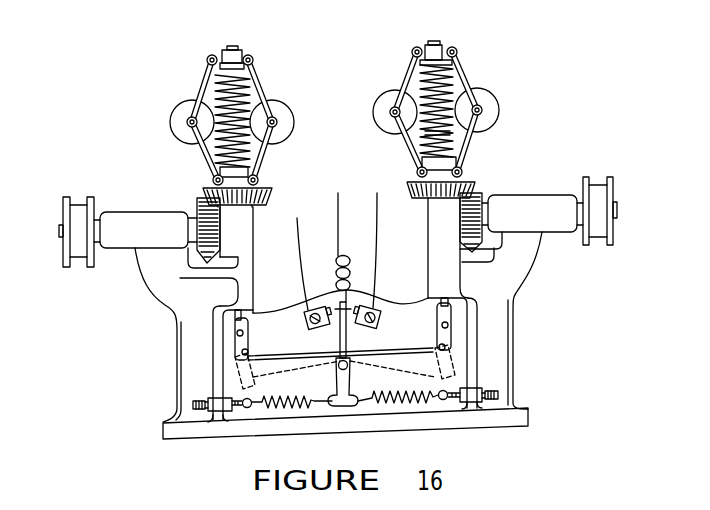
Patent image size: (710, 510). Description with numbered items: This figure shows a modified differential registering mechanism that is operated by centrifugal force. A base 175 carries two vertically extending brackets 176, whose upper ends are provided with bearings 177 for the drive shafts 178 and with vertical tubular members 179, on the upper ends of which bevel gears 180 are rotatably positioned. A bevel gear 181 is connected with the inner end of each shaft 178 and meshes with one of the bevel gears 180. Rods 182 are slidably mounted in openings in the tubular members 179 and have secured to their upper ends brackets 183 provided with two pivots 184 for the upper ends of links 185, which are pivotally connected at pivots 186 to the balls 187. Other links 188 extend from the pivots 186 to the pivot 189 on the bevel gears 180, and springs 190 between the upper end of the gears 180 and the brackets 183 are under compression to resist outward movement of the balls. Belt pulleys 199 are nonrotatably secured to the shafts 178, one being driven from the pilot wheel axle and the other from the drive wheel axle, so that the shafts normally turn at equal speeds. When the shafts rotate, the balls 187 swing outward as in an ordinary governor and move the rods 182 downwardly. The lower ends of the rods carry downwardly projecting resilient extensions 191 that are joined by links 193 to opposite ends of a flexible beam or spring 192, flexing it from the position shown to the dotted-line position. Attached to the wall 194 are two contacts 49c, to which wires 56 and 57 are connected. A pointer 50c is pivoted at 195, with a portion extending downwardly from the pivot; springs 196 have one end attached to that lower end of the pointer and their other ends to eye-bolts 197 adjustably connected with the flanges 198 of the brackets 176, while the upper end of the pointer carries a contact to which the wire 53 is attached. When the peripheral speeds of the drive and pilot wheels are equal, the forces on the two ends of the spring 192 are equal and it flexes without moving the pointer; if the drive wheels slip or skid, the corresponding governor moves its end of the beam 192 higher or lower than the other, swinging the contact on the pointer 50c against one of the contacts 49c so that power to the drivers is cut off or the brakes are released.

The base 175 is at (257, 433).
The brackets 176 is at (175, 353).
The bearings 177 is at (145, 208).
The drive shafts 178 is at (60, 237).
The vertical tubular members 179 is at (242, 233).
The bevel gears 180 is at (263, 190).
The bevel gear 181 is at (203, 200).
The rods 182 is at (247, 85).
The brackets 183 is at (243, 50).
The pivots 184 is at (457, 48).
The links 185 is at (407, 80).
The pivots 186 is at (392, 110).
The balls 187 is at (390, 120).
The links 188 is at (412, 145).
The pivot 189 is at (418, 172).
The springs 190 is at (452, 134).
The resilient extensions 191 is at (236, 316).
The flexible beam or spring 192 is at (398, 352).
The links 193 is at (236, 340).
The wall 194 is at (392, 311).
The pivot 195 is at (348, 366).
The tension spring 196 is at (277, 396).
The eye-bolts 197 is at (194, 403).
The flanges 198 is at (213, 368).
The belt pulleys 199 is at (85, 263).
The wire 53 is at (337, 212).
The wire 56 is at (302, 240).
The wire 57 is at (379, 226).
The contacts 49c is at (316, 331).
The pointer 50c is at (340, 342).